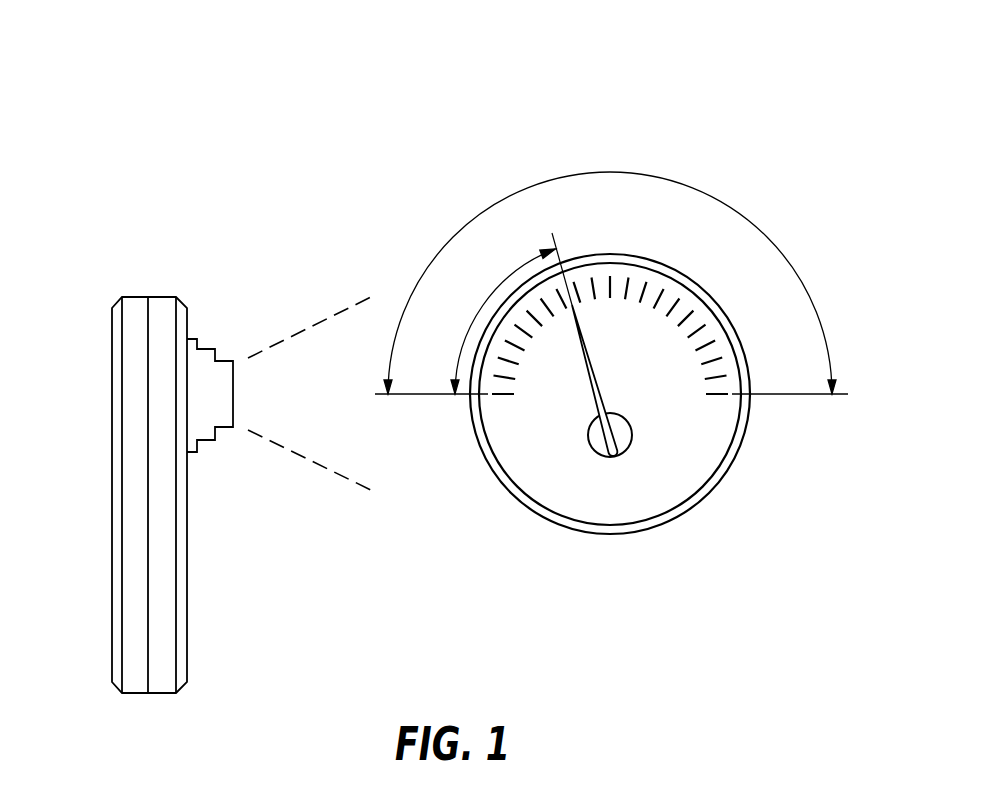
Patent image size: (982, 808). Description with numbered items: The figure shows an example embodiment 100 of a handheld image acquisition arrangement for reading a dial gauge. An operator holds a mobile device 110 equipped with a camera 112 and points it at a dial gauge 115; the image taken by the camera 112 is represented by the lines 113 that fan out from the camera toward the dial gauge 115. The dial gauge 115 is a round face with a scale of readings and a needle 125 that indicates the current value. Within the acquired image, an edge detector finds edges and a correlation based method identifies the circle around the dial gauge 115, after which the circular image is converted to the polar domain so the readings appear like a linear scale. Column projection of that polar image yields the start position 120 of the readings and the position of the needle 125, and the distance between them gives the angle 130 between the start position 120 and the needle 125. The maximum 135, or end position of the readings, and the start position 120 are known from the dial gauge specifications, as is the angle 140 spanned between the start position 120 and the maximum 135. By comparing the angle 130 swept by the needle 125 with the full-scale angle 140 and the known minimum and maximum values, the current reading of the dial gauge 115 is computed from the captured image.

The handheld image acquisition embodiment 100 is at (192, 136).
The mobile device 110 is at (112, 497).
The camera 112 is at (233, 394).
The lines 113 is at (312, 326).
The dial gauge 115 is at (643, 259).
The start position 120 is at (506, 396).
The needle 125 is at (590, 358).
The angle 130 is at (483, 304).
The maximum position 135 is at (713, 396).
The angle 140 is at (612, 173).